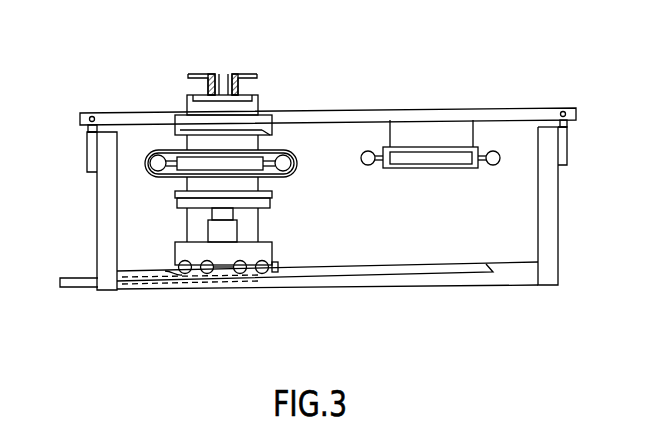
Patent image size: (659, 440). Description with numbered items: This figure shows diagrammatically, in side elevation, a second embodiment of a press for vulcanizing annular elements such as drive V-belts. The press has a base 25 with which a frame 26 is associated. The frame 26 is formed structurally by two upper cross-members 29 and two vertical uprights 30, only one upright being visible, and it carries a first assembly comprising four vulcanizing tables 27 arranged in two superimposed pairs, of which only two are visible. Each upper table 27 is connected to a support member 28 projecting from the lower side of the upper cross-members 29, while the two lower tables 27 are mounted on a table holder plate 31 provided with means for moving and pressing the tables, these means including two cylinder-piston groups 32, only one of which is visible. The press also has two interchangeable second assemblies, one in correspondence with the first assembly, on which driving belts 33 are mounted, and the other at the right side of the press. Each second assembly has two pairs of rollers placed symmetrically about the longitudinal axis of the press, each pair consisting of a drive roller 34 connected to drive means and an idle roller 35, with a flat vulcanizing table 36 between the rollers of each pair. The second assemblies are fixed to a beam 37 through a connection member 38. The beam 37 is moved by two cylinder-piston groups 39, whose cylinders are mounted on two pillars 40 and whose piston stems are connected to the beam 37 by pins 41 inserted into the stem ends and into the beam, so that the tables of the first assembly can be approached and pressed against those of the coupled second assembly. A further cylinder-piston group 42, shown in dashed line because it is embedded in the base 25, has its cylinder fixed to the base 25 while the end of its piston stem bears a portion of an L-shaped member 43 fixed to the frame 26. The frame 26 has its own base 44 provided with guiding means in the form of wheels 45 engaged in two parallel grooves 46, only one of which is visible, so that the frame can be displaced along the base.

The base 25 is at (438, 281).
The frame 26 is at (222, 84).
The vulcanizing tables 27 is at (296, 150).
The support member 28 is at (262, 113).
The upper cross-members 29 is at (205, 76).
The vertical uprights 30 is at (190, 232).
The table holder plate 31 is at (173, 205).
The cylinder-piston groups 32 is at (215, 244).
The driving belts 33 is at (152, 172).
The drive roller 34 is at (334, 110).
The idle roller 35 is at (148, 152).
The flat vulcanizing table 36 is at (437, 168).
The beam 37 is at (375, 151).
The connection member 38 is at (187, 144).
The cylinder-piston groups 39 is at (90, 162).
The pillars 40 is at (103, 258).
The pins 41 is at (92, 117).
The cylinder-piston group 42 is at (250, 284).
The L-shaped member 43 is at (279, 272).
The base of the frame 44 is at (255, 254).
The wheels 45 is at (186, 275).
The grooves 46 is at (387, 272).